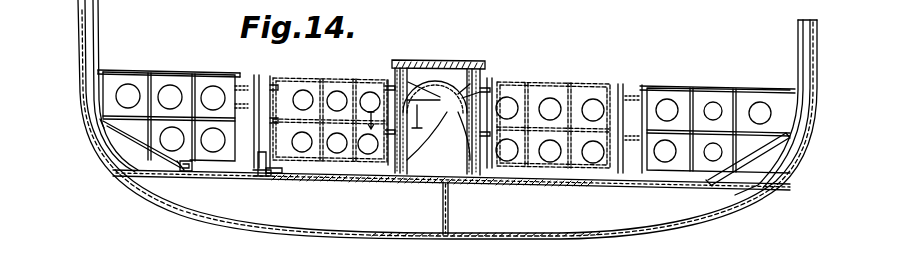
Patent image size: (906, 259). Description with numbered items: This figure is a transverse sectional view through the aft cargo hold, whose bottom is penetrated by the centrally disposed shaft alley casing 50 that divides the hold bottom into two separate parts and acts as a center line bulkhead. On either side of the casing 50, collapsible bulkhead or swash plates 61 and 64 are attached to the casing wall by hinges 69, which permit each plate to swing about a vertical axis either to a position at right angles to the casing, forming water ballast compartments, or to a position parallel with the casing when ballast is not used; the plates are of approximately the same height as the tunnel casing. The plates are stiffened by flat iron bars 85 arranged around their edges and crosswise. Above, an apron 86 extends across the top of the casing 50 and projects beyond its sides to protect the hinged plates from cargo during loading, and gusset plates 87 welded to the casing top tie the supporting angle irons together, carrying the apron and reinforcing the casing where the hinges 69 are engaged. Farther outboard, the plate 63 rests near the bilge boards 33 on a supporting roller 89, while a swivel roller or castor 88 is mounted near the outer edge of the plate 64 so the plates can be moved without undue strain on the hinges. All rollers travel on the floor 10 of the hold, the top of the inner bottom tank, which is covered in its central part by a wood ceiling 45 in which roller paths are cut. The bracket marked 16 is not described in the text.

The floor of the hold 10 is at (234, 170).
The gauge bracket 16 is at (424, 118).
The bilge boards 33 is at (125, 140).
The wood ceiling 45 is at (372, 177).
The shaft alley casing 50 is at (430, 166).
The bulkhead or swash plate 61 is at (363, 120).
The bulkhead or swash plate 63 is at (162, 78).
The bulkhead or swash plate 64 is at (258, 168).
The hinges 69 is at (443, 121).
The iron bars 85 is at (196, 83).
The apron 86 is at (445, 64).
The gusset plates 87 is at (473, 78).
The swivel roller or castor 88 is at (274, 174).
The supporting roller 89 is at (185, 172).